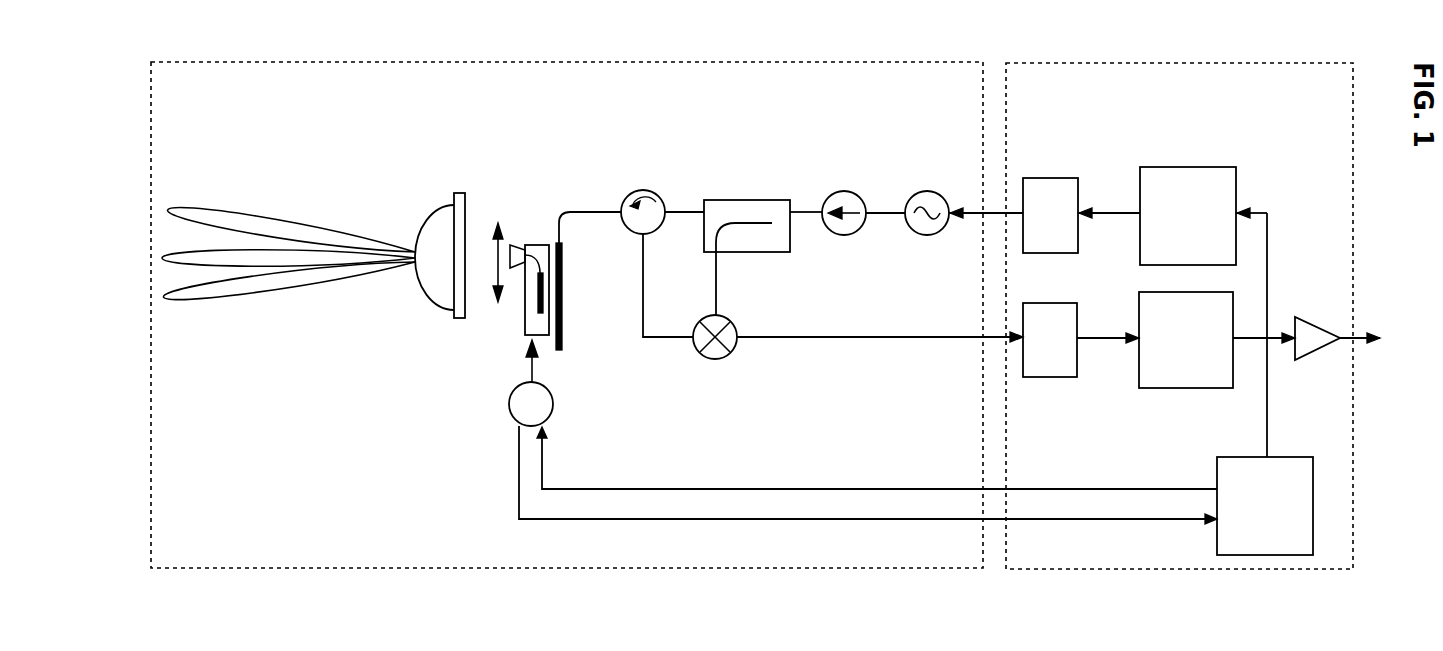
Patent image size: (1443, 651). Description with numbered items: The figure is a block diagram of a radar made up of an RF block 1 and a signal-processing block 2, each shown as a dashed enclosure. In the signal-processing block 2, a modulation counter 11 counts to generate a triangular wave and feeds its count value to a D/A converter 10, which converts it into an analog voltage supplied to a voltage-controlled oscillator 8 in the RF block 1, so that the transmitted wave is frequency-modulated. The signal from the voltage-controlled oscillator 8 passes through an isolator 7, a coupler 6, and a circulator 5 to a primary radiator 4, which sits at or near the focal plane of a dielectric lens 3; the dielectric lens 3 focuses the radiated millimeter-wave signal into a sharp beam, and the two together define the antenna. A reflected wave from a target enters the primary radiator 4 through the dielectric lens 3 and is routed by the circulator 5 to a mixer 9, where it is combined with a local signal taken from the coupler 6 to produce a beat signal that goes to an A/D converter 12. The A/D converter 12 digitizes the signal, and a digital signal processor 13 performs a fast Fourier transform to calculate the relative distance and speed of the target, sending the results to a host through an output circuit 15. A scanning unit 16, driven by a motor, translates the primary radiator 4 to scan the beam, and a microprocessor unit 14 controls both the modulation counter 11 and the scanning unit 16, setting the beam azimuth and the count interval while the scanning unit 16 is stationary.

The RF block 1 is at (680, 60).
The signal-processing block 2 is at (1188, 58).
The dielectric lens 3 is at (430, 205).
The primary radiator 4 is at (535, 232).
The circulator 5 is at (648, 190).
The coupler 6 is at (765, 200).
The isolator 7 is at (848, 191).
The voltage-controlled oscillator 8 is at (930, 191).
The mixer 9 is at (735, 352).
The D/A converter 10 is at (1068, 178).
The modulation counter 11 is at (1233, 167).
The A/D converter 12 is at (1045, 377).
The digital signal processor 13 is at (1145, 388).
The microprocessor unit 14 is at (1313, 457).
The output circuit 15 is at (1322, 322).
The scanning unit 16 is at (492, 410).